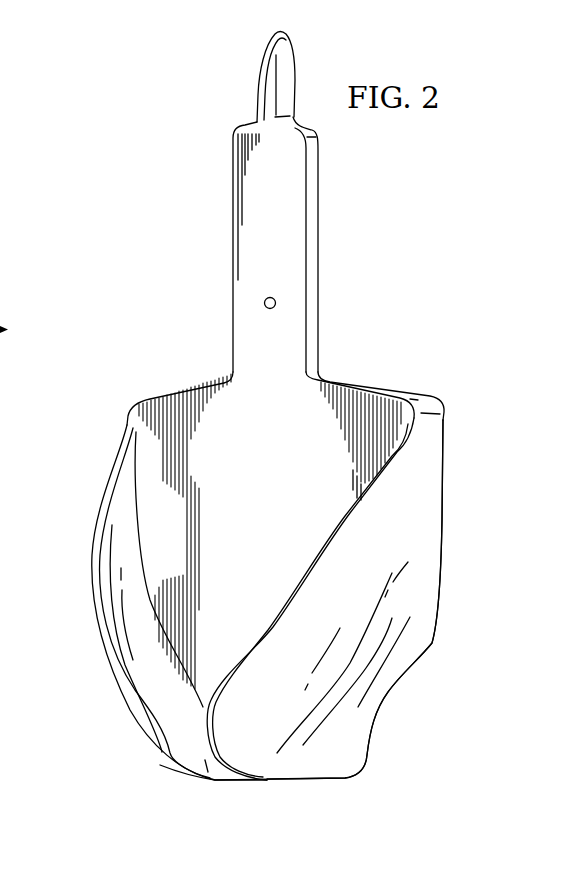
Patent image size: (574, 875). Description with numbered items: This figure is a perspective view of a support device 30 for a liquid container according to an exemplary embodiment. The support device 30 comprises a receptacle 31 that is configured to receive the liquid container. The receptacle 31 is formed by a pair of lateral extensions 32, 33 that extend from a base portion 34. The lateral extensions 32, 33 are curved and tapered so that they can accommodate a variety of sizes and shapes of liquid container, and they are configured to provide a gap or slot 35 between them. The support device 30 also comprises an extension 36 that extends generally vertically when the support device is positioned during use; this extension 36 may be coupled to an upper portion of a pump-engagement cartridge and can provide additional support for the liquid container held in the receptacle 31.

The support device 30 is at (90, 684).
The receptacle 31 is at (278, 519).
The lateral extension 32 is at (92, 556).
The lateral extension 33 is at (378, 541).
The base portion 34 is at (382, 380).
The gap or slot 35 is at (207, 772).
The extension 36 is at (323, 184).